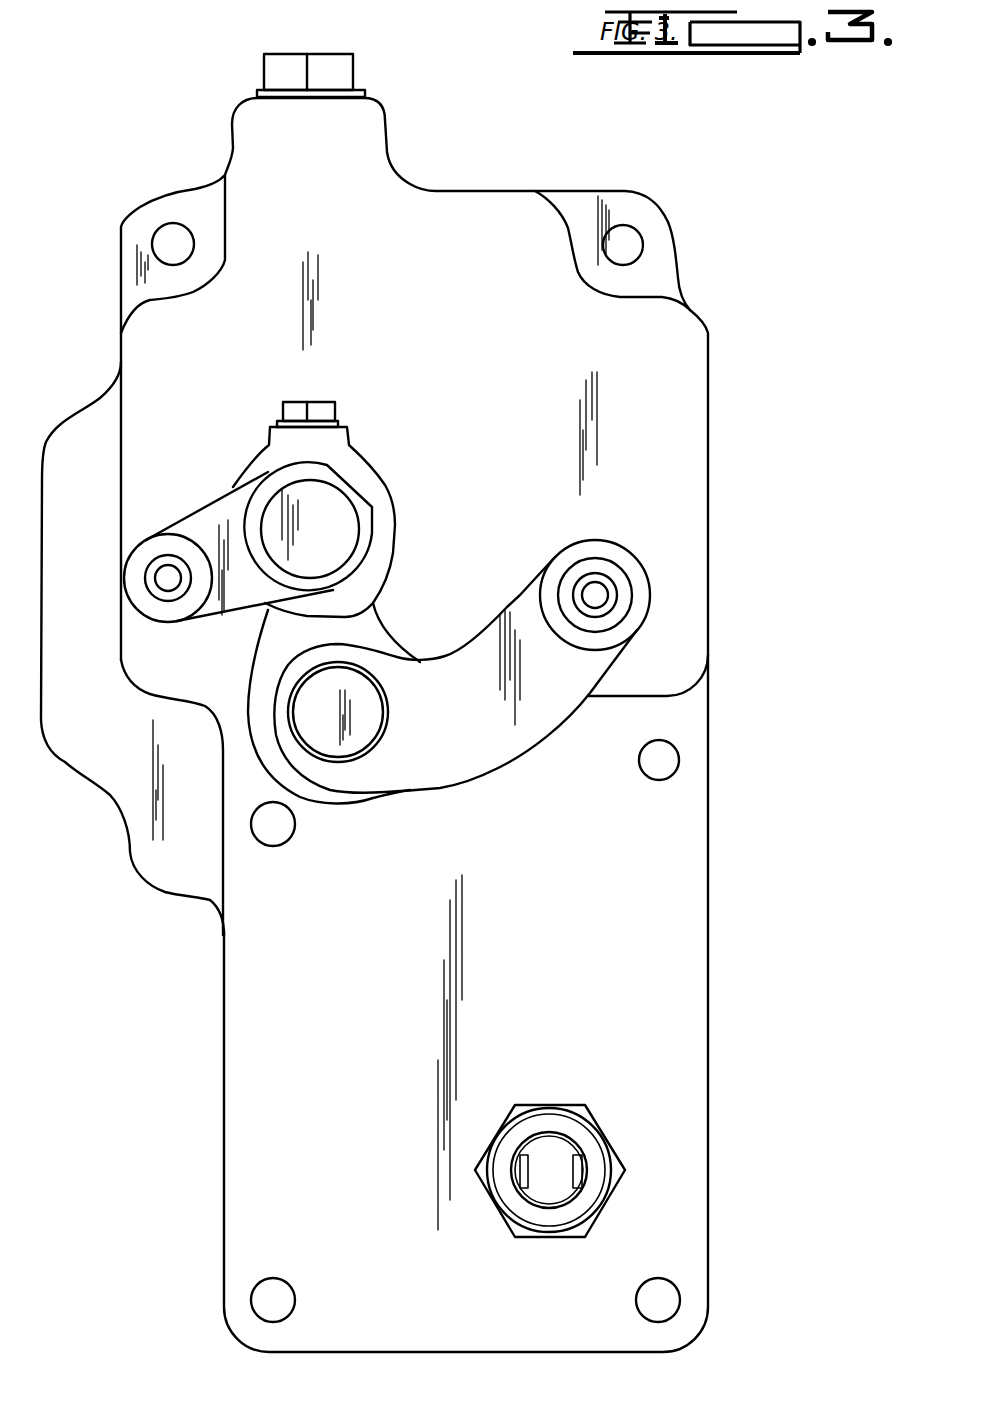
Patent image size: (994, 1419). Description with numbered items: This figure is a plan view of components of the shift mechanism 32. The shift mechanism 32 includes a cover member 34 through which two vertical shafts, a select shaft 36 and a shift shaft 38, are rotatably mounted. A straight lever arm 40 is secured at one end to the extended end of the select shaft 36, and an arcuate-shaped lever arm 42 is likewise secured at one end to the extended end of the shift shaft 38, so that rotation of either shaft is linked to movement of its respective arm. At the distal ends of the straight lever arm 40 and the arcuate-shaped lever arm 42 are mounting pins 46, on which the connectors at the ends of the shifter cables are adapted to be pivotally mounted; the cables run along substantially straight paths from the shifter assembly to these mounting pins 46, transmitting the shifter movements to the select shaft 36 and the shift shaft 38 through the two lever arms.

The shift mechanism 32 is at (722, 447).
The cover member 34 is at (552, 381).
The select shaft 36 is at (358, 538).
The shift shaft 38 is at (372, 718).
The straight lever arm 40 is at (210, 613).
The arcuate-shaped lever arm 42 is at (520, 757).
The mounting pins 46 is at (152, 580).